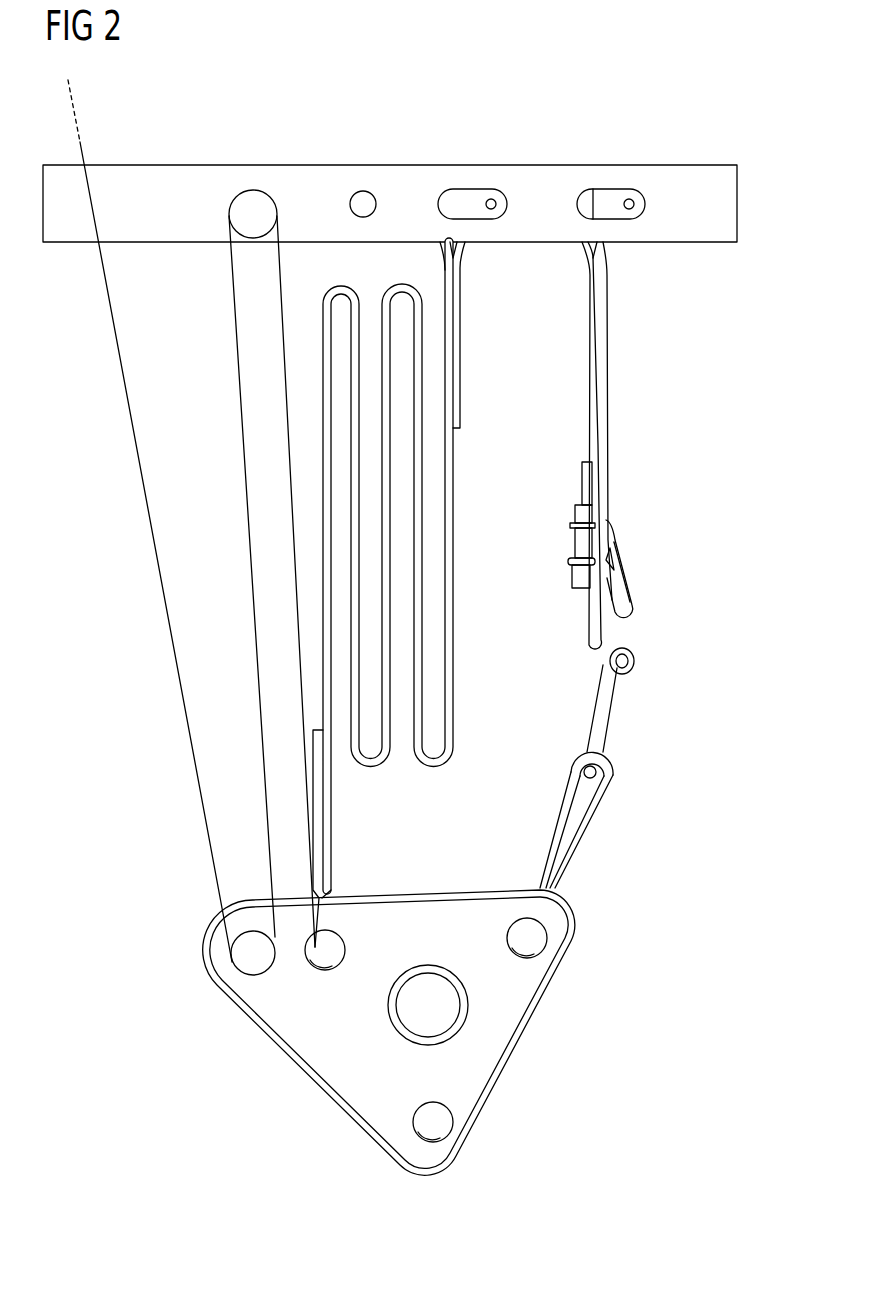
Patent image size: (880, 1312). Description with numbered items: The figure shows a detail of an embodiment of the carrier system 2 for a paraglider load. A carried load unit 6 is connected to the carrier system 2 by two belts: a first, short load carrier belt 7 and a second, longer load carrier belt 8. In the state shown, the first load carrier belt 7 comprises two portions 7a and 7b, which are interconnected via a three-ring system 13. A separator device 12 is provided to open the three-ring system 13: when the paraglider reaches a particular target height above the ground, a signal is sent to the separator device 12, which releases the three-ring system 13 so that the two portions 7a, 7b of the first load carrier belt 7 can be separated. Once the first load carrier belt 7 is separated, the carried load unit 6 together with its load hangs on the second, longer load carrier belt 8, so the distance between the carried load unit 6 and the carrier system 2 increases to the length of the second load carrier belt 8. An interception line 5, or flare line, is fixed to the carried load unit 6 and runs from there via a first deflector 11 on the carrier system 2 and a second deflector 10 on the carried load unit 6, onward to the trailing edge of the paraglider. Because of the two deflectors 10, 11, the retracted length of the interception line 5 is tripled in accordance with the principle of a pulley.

The carrier system 2 is at (550, 181).
The interception line 5 is at (142, 498).
The carried load unit 6 is at (518, 1013).
The first load carrier belt 7 is at (638, 513).
The first portion of the first load carrier belt 7a is at (607, 380).
The second portion of the first load carrier belt 7b is at (588, 818).
The second load carrier belt 8 is at (382, 762).
The second deflector 10 is at (253, 975).
The first deflector 11 is at (253, 190).
The separator device 12 is at (580, 540).
The three-ring system 13 is at (641, 631).